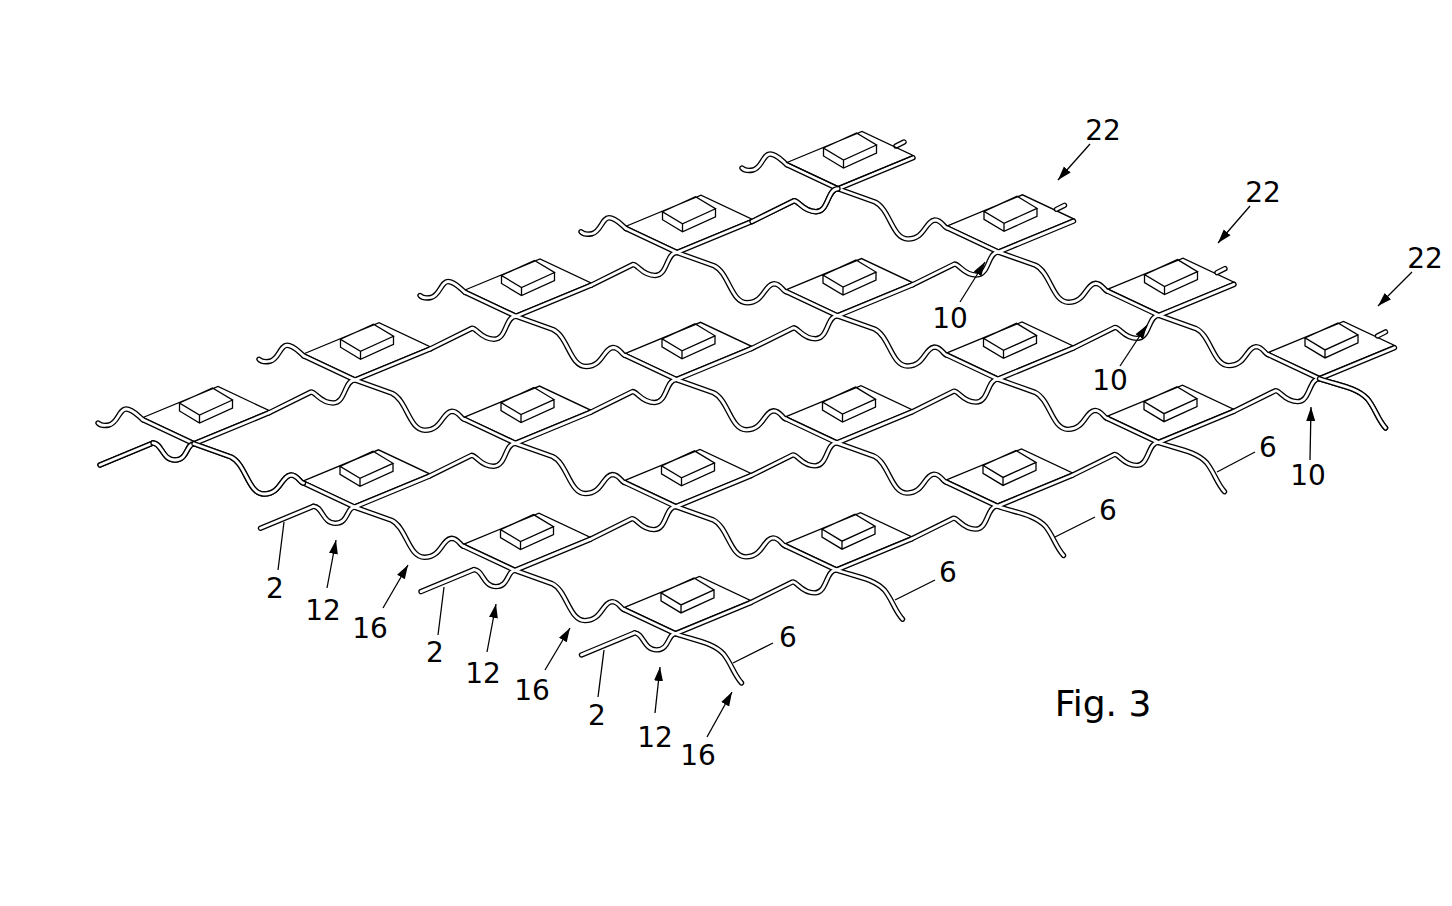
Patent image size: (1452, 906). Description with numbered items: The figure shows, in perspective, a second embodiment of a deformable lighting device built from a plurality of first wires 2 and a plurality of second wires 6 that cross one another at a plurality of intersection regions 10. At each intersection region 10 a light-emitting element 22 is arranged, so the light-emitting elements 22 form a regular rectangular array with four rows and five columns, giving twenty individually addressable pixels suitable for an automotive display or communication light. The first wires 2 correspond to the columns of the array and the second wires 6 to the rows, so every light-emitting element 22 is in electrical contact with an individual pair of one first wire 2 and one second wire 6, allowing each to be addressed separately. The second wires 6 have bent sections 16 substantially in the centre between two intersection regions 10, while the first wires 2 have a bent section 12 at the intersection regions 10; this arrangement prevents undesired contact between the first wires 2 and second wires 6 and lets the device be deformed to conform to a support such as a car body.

The light-emitting element 22 is at (897, 118).
The intersection region 10 is at (822, 200).
The second wire 6 is at (1377, 408).
The first wire 2 is at (123, 458).
The bent section 12 is at (175, 475).
The bent section 16 is at (247, 500).